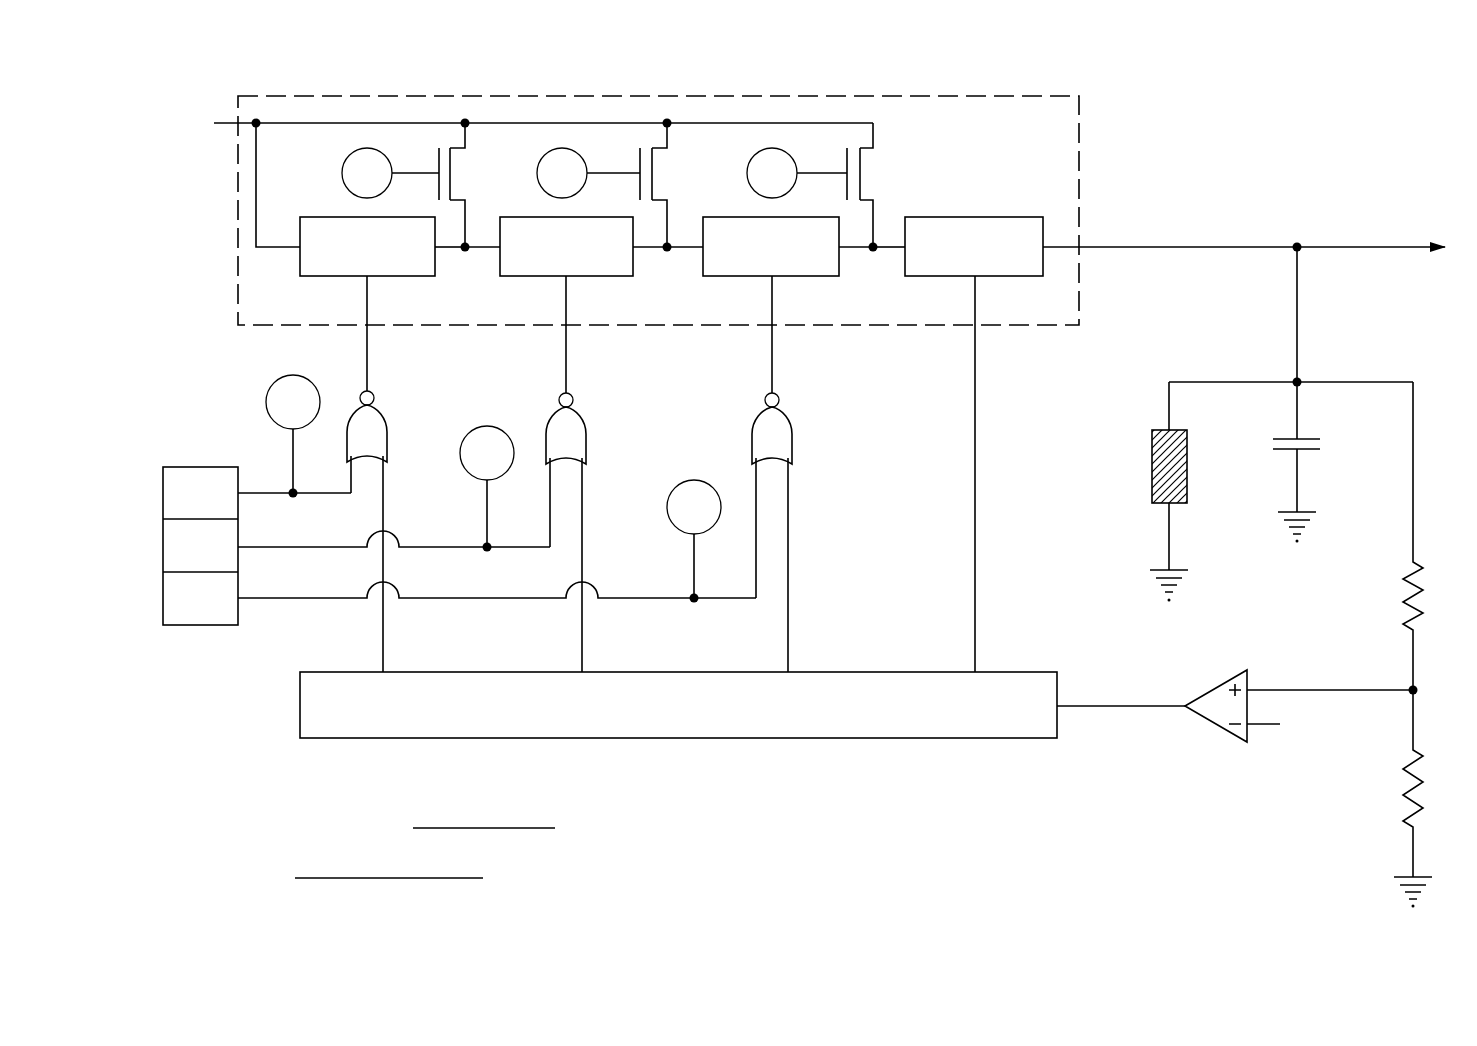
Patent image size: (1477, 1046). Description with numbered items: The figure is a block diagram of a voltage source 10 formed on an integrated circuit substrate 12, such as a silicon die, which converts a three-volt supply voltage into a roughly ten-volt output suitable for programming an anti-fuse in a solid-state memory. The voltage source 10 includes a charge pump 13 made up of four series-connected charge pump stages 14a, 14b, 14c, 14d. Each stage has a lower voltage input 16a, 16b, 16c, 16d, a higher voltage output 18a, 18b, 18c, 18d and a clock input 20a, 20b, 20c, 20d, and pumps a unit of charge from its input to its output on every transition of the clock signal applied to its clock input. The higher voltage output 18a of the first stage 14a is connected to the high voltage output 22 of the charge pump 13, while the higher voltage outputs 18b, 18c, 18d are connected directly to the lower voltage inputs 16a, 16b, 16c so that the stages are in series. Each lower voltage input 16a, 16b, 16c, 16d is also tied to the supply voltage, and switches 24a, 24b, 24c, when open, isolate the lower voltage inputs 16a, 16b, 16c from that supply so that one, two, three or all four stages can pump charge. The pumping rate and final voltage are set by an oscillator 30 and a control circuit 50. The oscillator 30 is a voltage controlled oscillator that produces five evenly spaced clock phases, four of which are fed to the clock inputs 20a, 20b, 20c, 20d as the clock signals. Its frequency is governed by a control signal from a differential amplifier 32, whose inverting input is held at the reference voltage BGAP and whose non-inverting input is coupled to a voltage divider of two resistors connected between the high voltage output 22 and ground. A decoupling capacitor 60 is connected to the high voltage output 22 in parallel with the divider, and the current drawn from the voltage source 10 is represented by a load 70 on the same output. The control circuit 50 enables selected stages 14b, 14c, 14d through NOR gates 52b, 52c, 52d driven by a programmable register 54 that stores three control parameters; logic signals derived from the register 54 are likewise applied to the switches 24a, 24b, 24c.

The voltage source 10 is at (303, 772).
The integrated circuit substrate 12 is at (1108, 848).
The charge pump 13 is at (1079, 148).
The charge pump stage 14a is at (1010, 277).
The charge pump stage 14b is at (809, 277).
The charge pump stage 14c is at (605, 277).
The charge pump stage 14d is at (405, 277).
The lower voltage input 16a is at (877, 244).
The lower voltage input 16b is at (668, 244).
The lower voltage input 16c is at (466, 244).
The lower voltage input 16d is at (268, 249).
The higher voltage output 18a is at (1060, 246).
The higher voltage output 18b is at (856, 249).
The higher voltage output 18c is at (652, 249).
The higher voltage output 18d is at (452, 249).
The clock input 20a is at (975, 301).
The clock input 20b is at (772, 301).
The clock input 20c is at (566, 299).
The clock input 20d is at (367, 300).
The high voltage output 22 is at (1380, 251).
The switch 24a is at (874, 146).
The switch 24b is at (668, 146).
The switch 24c is at (466, 146).
The oscillator 30 is at (947, 734).
The differential amplifier 32 is at (1215, 731).
The control circuit 50 is at (238, 418).
The NOR gate 52b is at (795, 438).
The NOR gate 52c is at (590, 433).
The NOR gate 52d is at (391, 428).
The programmable register 54 is at (238, 531).
The decoupling capacitor 60 is at (1315, 426).
The load 70 is at (1151, 472).